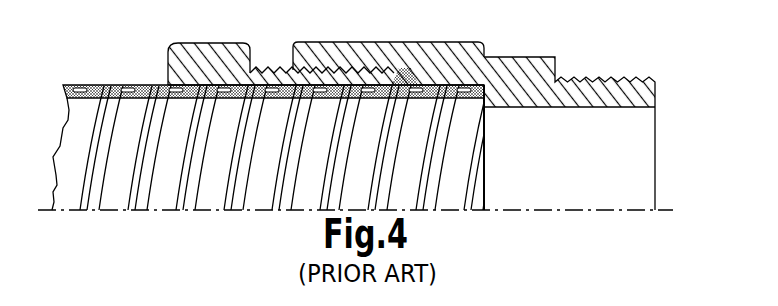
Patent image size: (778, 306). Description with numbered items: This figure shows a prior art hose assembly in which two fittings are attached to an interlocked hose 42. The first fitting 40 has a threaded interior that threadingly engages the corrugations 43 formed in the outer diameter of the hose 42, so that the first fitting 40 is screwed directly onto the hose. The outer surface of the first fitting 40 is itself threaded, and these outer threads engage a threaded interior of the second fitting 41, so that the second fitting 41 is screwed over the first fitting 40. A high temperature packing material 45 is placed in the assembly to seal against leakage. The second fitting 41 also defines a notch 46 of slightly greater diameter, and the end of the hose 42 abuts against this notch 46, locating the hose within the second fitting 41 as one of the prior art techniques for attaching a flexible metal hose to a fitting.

The first fitting 40 is at (173, 63).
The second fitting 41 is at (437, 42).
The interlocked hose 42 is at (112, 84).
The corrugations 43 is at (233, 153).
The high temperature packing material 45 is at (414, 80).
The notch 46 is at (487, 97).